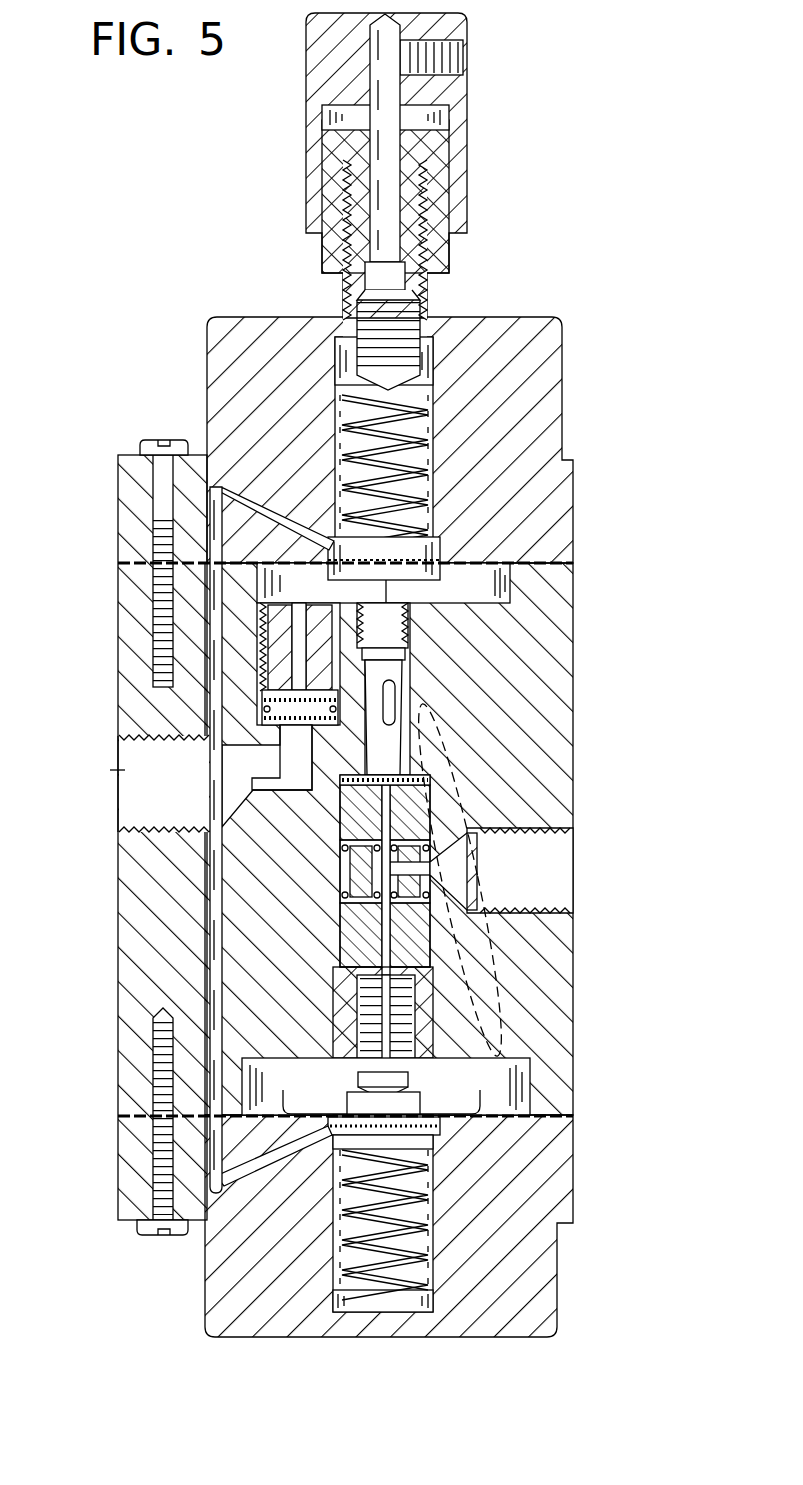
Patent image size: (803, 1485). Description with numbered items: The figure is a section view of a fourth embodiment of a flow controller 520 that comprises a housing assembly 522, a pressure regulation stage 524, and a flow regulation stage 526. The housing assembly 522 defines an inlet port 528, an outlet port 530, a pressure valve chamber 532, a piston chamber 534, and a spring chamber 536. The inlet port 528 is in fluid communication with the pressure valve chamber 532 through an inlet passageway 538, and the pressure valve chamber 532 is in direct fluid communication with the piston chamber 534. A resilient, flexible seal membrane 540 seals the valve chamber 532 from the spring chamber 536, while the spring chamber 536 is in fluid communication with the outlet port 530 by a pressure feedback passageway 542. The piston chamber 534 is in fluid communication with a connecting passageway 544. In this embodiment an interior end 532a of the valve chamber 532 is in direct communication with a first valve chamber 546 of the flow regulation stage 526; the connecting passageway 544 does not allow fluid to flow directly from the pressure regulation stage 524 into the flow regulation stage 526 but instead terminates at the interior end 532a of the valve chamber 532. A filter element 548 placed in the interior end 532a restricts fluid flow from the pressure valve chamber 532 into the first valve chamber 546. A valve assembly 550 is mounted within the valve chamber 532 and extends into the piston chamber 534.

The flow controller 520 is at (195, 272).
The housing assembly 522 is at (580, 325).
The pressure regulation stage 524 is at (590, 1046).
The flow regulation stage 526 is at (598, 395).
The inlet port 528 is at (572, 836).
The outlet port 530 is at (132, 765).
The pressure valve chamber 532 is at (440, 992).
The interior end of the valve chamber 532a is at (430, 725).
The piston chamber 534 is at (503, 1078).
The spring chamber 536 is at (413, 1238).
The inlet passageway 538 is at (530, 848).
The seal membrane 540 is at (470, 1118).
The pressure feedback passageway 542 is at (210, 885).
The connecting passageway 544 is at (500, 938).
The first valve chamber 546 is at (400, 740).
The filter element 548 is at (423, 768).
The valve assembly 550 is at (445, 1013).